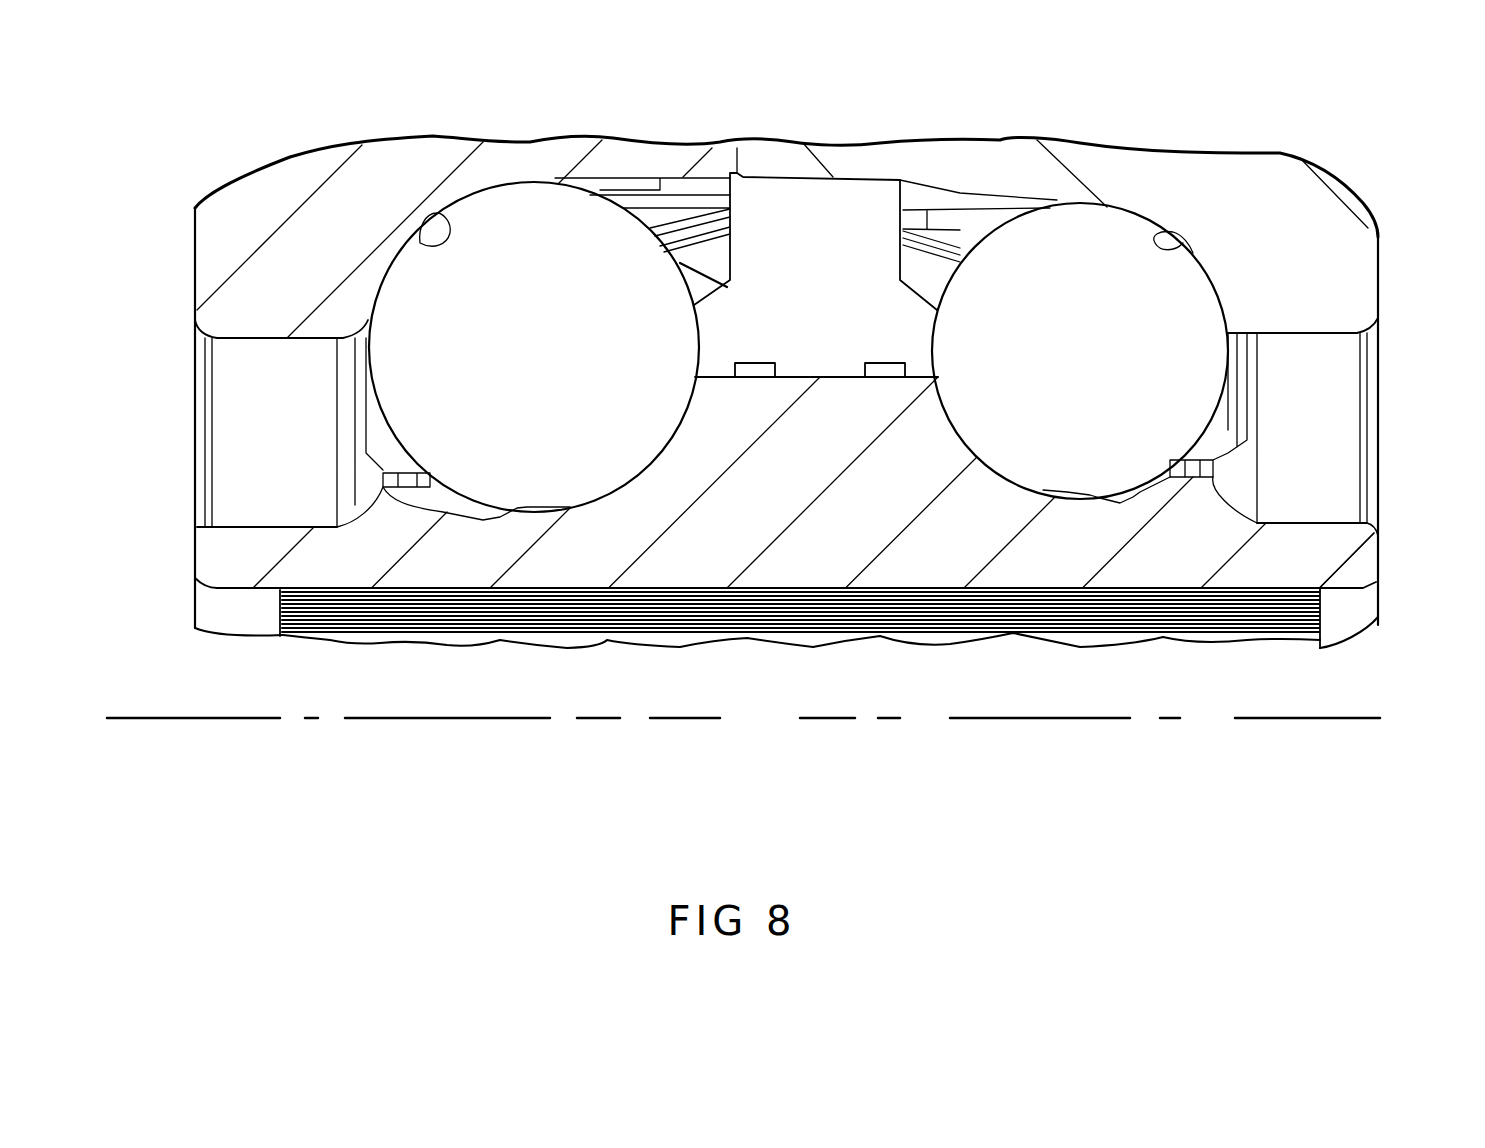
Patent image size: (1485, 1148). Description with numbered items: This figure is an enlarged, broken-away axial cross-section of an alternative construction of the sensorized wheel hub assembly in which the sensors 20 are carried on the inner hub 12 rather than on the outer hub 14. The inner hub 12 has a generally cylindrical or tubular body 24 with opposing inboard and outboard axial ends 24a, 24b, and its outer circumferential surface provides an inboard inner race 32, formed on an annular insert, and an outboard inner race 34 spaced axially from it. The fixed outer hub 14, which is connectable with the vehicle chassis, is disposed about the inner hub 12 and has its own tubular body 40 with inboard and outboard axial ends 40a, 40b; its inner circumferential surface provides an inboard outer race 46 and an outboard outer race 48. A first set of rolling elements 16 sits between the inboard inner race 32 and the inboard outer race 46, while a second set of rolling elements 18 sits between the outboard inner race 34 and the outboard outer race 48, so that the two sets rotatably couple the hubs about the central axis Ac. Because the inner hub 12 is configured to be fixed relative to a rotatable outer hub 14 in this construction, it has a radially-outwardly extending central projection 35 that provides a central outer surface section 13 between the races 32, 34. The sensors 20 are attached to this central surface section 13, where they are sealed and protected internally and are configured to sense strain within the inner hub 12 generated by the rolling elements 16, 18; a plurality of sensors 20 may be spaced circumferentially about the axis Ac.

The inner hub 12 is at (1395, 611).
The central outer surface section 13 is at (805, 362).
The outer hub 14 is at (1280, 126).
The rolling elements 16 is at (1170, 320).
The rolling elements 18 is at (403, 283).
The sensors 20 is at (757, 362).
The tubular body 24 is at (1338, 522).
The inboard axial end 24a is at (1377, 552).
The outboard axial end 24b is at (200, 552).
The inboard inner race 32 is at (957, 426).
The outboard inner race 34 is at (670, 441).
The central projection 35 is at (833, 398).
The tubular body 40 is at (1321, 341).
The inboard axial end 40a is at (1367, 270).
The outboard axial end 40b is at (210, 252).
The inboard outer race 46 is at (1183, 243).
The outboard outer race 48 is at (420, 243).
The central axis Ac is at (1377, 717).